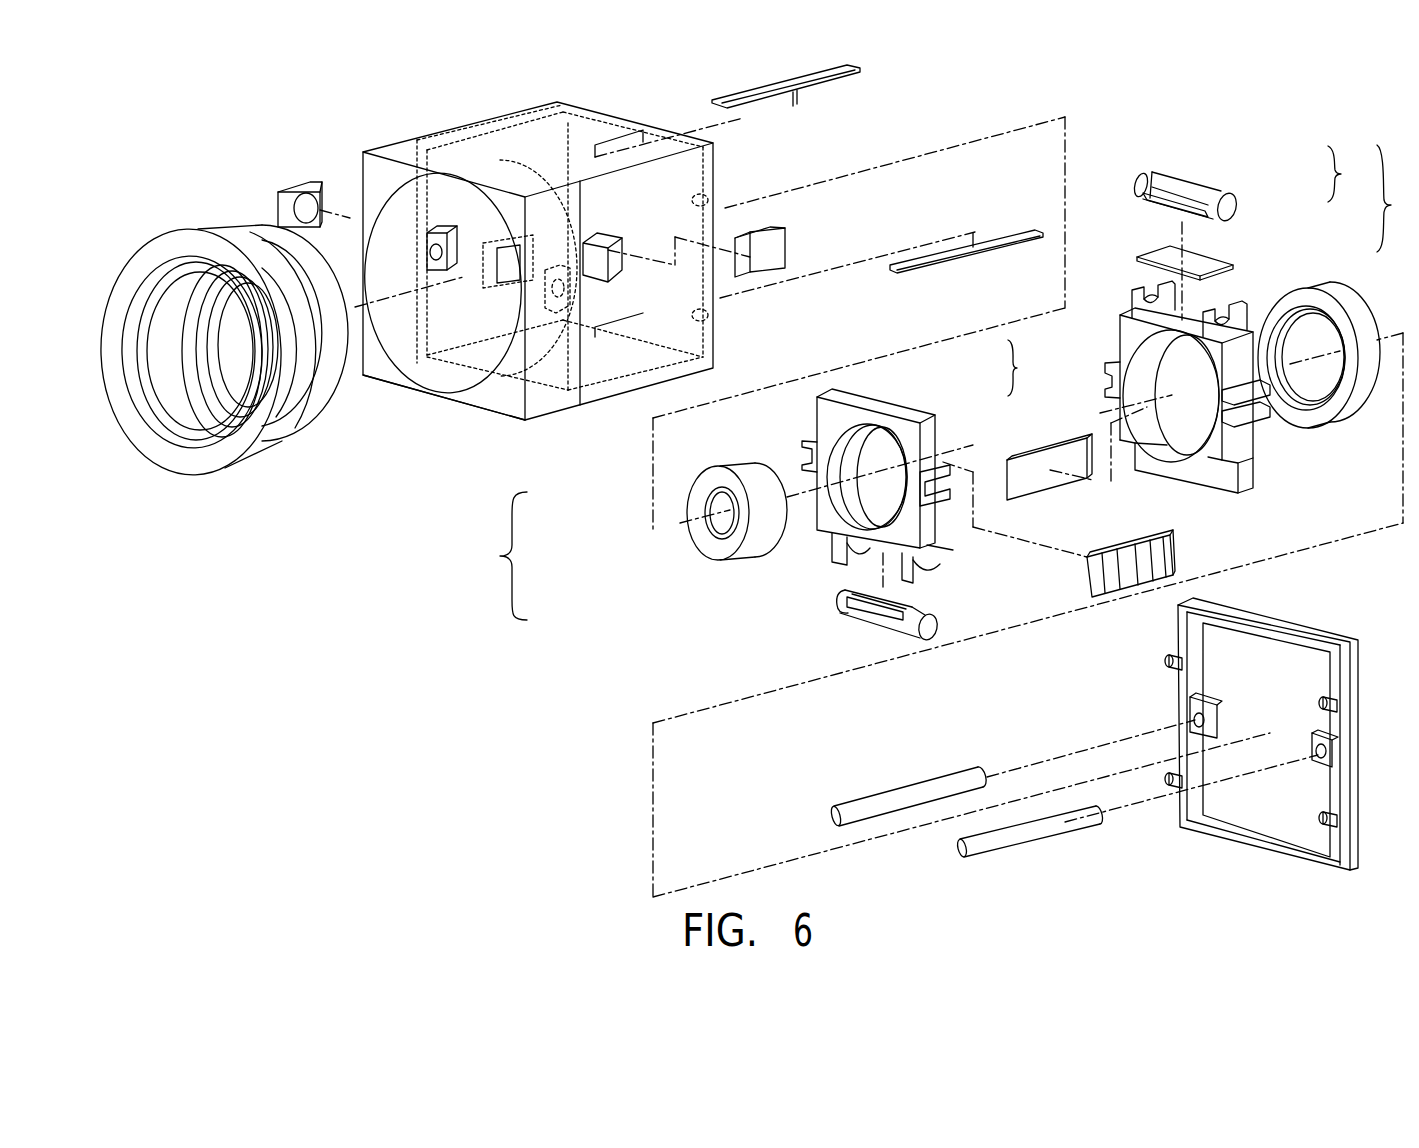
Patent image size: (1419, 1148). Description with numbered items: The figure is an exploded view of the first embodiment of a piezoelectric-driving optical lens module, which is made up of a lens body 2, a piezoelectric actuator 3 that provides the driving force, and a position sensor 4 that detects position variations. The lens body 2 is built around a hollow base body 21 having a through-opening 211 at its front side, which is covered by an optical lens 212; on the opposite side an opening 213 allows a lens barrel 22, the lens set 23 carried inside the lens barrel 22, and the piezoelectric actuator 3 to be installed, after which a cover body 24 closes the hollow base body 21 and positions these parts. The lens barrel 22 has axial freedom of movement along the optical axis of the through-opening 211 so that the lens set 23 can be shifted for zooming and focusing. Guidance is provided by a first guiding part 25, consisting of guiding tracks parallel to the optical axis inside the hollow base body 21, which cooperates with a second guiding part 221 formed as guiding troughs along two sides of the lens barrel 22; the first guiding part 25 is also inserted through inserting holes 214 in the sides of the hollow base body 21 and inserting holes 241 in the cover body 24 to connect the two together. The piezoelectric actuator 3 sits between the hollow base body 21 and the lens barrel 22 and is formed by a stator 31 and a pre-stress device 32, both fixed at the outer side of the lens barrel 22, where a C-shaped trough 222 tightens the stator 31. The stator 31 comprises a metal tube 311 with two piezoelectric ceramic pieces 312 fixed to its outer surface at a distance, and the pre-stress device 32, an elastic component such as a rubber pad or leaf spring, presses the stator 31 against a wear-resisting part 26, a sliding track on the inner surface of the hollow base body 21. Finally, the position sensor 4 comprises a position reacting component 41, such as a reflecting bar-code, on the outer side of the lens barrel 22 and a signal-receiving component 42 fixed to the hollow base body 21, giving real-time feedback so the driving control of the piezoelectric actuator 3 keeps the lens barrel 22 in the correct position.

The lens body 2 is at (505, 556).
The piezoelectric actuator 3 is at (1392, 198).
The position sensor 4 is at (1020, 368).
The hollow base body 21 is at (543, 402).
The lens barrel 22 is at (827, 520).
The lens set 23 is at (693, 535).
The cover body 24 is at (1350, 755).
The first guiding part 25 is at (917, 787).
The wear-resisting part 26 is at (843, 73).
The stator 31 is at (1351, 174).
The pre-stress device 32 is at (1203, 263).
The position reacting component 41 is at (1093, 553).
The signal-receiving component 42 is at (303, 185).
The through-opening 211 is at (438, 378).
The optical lens 212 is at (254, 447).
The opening 213 is at (720, 163).
The inserting hole 214 is at (430, 253).
The second guiding part 221 is at (1103, 378).
The C-shaped trough 222 is at (1153, 297).
The inserting hole 241 is at (1323, 753).
The metal tube 311 is at (1215, 190).
The piezoelectric ceramic pieces 312 is at (1203, 190).